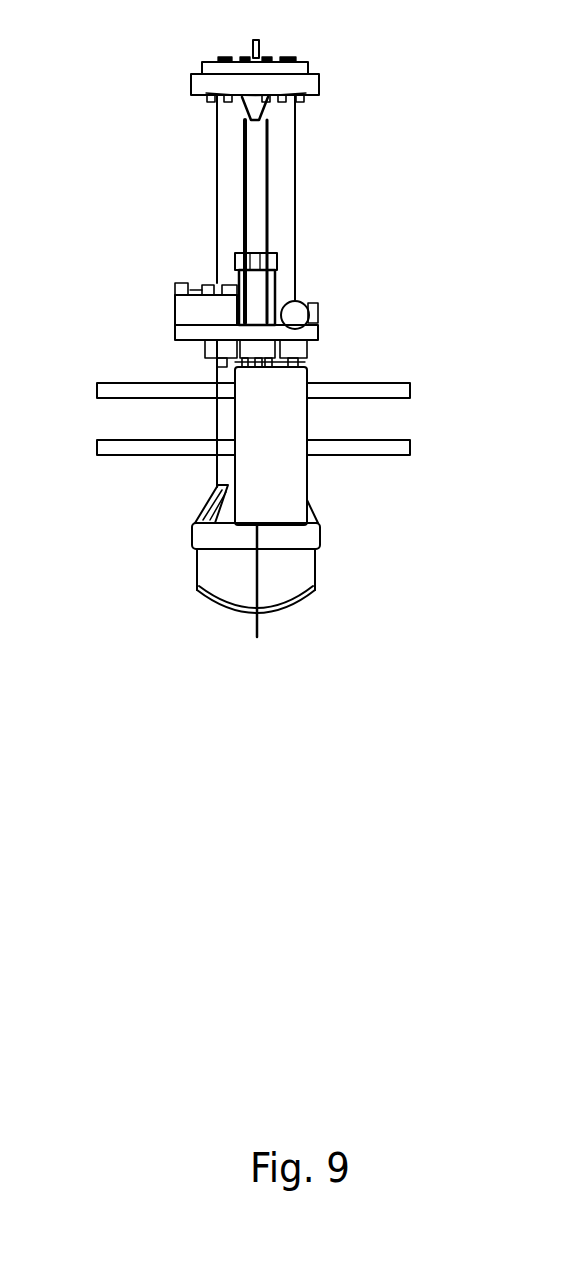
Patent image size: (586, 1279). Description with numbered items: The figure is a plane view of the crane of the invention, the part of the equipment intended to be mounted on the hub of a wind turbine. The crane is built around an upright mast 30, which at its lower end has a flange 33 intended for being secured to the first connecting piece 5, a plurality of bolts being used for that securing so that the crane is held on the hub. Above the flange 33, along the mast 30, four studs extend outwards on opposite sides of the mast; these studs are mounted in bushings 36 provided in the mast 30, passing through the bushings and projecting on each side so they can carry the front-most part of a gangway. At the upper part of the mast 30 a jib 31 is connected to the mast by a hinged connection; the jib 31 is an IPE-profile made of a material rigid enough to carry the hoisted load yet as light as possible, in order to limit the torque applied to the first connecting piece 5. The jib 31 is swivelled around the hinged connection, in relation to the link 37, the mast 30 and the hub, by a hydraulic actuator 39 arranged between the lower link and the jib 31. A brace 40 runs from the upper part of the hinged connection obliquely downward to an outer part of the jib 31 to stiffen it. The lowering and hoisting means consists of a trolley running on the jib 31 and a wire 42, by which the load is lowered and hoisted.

The first connecting piece 5 is at (217, 558).
The mast 30 is at (285, 192).
The jib 31 is at (258, 292).
The flange 33 is at (193, 518).
The bushings 36 is at (122, 390).
The link 37 is at (313, 83).
The hydraulic actuator 39 is at (189, 283).
The brace 40 is at (252, 190).
The wire 42 is at (257, 615).